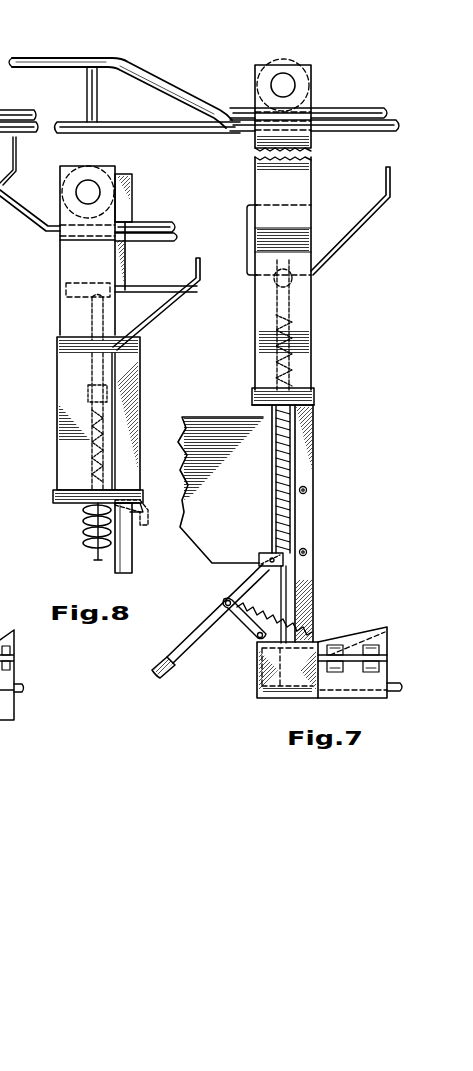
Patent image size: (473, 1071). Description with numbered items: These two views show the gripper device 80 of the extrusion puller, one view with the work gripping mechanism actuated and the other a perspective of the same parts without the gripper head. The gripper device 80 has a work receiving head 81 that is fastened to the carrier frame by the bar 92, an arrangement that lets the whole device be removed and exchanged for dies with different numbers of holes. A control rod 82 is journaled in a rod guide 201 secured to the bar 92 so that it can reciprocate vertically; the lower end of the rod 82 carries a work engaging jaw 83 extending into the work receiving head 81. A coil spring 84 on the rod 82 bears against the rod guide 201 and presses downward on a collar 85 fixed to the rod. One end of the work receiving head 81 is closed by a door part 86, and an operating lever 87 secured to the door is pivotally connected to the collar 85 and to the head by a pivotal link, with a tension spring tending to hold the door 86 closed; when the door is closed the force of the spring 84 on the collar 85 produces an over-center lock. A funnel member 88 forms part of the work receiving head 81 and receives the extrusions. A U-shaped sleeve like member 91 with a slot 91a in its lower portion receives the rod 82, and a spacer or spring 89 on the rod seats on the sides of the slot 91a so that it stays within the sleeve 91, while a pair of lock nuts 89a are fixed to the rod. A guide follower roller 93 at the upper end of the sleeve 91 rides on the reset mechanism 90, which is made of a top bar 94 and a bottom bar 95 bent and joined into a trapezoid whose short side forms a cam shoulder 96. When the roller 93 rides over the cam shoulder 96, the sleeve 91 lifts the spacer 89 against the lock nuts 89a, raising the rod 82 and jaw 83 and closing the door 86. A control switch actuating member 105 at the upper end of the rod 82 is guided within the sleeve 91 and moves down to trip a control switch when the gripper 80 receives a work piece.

In FIG. 7, the gripper device 80 is at (402, 572).
In FIG. 7, the work receiving head 81 is at (306, 676).
In FIG. 8, the control rod 82 is at (90, 450).
In FIG. 7, the control rod 82 is at (290, 580).
In FIG. 7, the work engaging jaw 83 is at (260, 680).
In FIG. 7, the coil spring 84 is at (292, 425).
In FIG. 7, the collar 85 is at (265, 553).
In FIG. 7, the door part 86 is at (177, 664).
In FIG. 7, the operating lever 87 is at (180, 640).
In FIG. 8, the funnel member 88 is at (0, 705).
In FIG. 7, the funnel member 88 is at (360, 680).
In FIG. 7, the spacer or spring 89 is at (293, 340).
In FIG. 7, the lock nuts 89a is at (275, 300).
In FIG. 7, the reset mechanism 90 is at (347, 138).
In FIG. 8, the U-shaped sleeve like member 91 is at (70, 280).
In FIG. 7, the U-shaped sleeve like member 91 is at (313, 292).
In FIG. 8, the slot 91a is at (148, 515).
In FIG. 8, the bar 92 is at (134, 555).
In FIG. 7, the bar 92 is at (316, 512).
In FIG. 8, the guide follower roller 93 is at (125, 190).
In FIG. 7, the guide follower roller 93 is at (298, 89).
In FIG. 8, the top bar 94 is at (19, 107).
In FIG. 7, the top bar 94 is at (388, 111).
In FIG. 7, the bottom bar 95 is at (400, 126).
In FIG. 8, the cam shoulder 96 is at (150, 70).
In FIG. 8, the control switch actuating member 105 is at (160, 322).
In FIG. 7, the control switch actuating member 105 is at (355, 242).
In FIG. 8, the rod guide 201 is at (54, 496).
In FIG. 7, the rod guide 201 is at (252, 396).